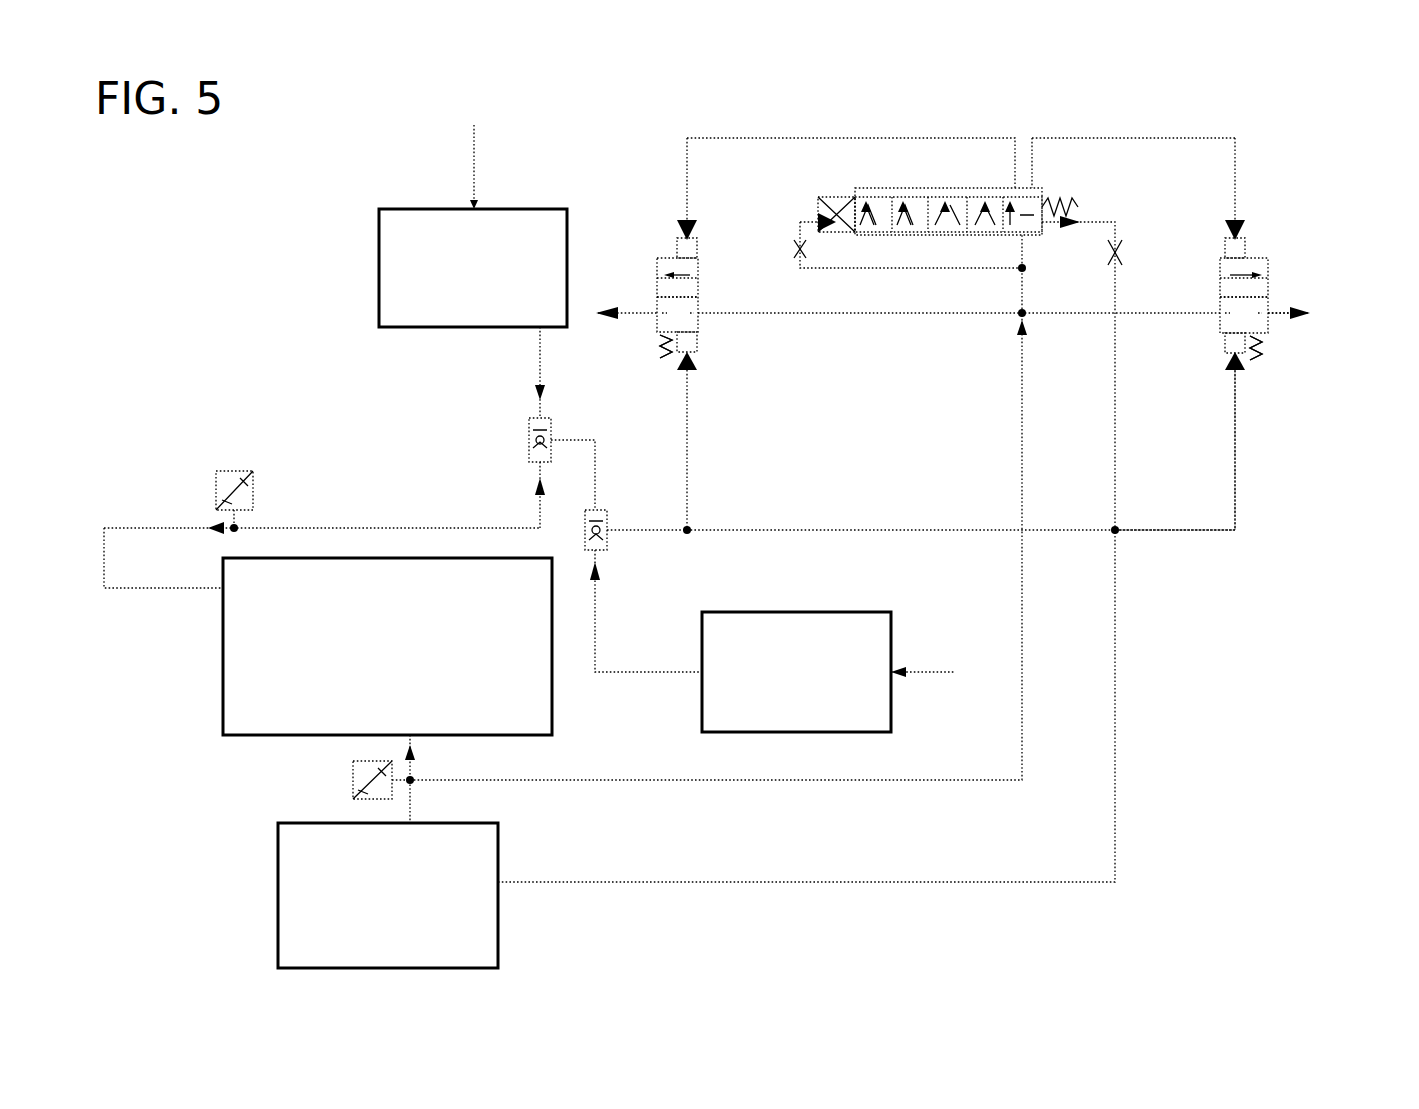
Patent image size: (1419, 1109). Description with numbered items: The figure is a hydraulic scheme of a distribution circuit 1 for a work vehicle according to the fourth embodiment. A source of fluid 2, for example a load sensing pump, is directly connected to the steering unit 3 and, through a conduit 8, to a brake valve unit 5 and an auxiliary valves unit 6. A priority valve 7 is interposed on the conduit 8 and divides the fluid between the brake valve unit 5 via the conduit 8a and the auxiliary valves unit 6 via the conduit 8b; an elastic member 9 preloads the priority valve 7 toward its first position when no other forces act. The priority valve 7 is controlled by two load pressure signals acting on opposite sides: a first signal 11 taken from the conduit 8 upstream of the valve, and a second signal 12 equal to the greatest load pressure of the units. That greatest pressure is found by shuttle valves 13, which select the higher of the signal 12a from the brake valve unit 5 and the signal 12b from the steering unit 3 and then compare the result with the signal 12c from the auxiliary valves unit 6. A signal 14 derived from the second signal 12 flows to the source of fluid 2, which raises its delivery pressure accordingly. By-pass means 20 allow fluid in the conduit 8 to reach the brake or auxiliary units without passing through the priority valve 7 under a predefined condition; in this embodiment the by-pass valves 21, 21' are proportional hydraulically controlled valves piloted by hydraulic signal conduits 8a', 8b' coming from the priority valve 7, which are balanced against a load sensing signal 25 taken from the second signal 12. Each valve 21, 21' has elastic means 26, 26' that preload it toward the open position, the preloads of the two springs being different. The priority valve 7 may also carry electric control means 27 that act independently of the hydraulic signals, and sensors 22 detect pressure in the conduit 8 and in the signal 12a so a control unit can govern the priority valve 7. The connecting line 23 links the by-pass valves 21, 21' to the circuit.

The distribution circuit 1 is at (1333, 619).
The source of fluid 2 is at (292, 893).
The steering unit 3 is at (232, 628).
The brake valve unit 5 is at (380, 224).
The auxiliary valves unit 6 is at (810, 634).
The priority valve 7 is at (940, 185).
The conduit 8 is at (1030, 666).
The conduit 8a is at (531, 248).
The conduit 8b is at (1121, 461).
The hydraulic signal conduit 8a' is at (851, 131).
The hydraulic signal conduit 8b' is at (1133, 132).
The elastic member 9 is at (1062, 206).
The first signal 11 is at (956, 300).
The second signal 12 is at (1122, 242).
The signal 12a is at (538, 346).
The signal 12b is at (418, 486).
The signal 12c is at (600, 652).
The shuttle valve 13 is at (529, 436).
The signal 14 is at (1118, 702).
The by-pass means 20 is at (655, 236).
The valve 21 is at (1285, 340).
The valve 21' is at (643, 270).
The sensor 22 is at (226, 471).
The connecting line 23 is at (832, 318).
The hydraulic load sensing signal 25 is at (1240, 482).
The elastic means 26 is at (1281, 380).
The elastic means 26' is at (653, 380).
The electric control means 27 is at (826, 190).